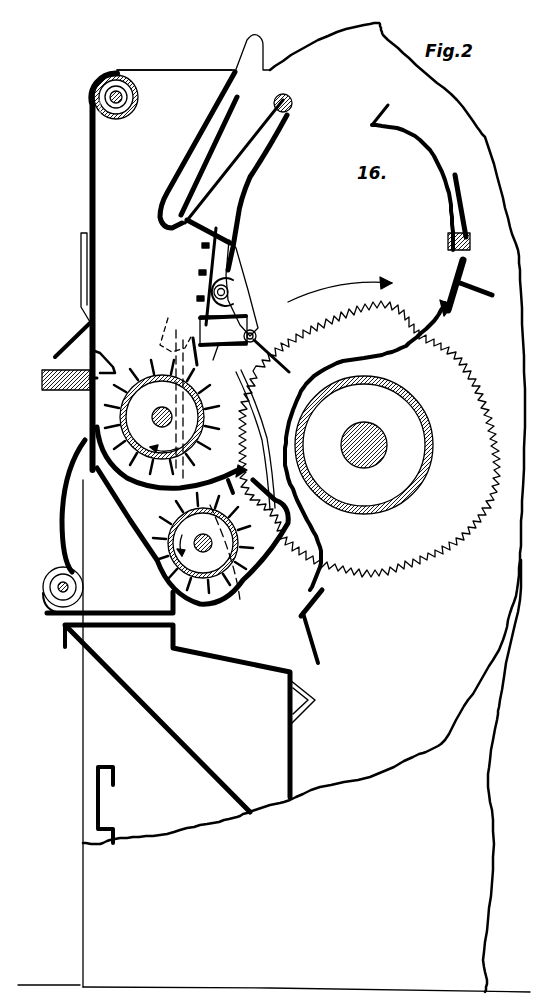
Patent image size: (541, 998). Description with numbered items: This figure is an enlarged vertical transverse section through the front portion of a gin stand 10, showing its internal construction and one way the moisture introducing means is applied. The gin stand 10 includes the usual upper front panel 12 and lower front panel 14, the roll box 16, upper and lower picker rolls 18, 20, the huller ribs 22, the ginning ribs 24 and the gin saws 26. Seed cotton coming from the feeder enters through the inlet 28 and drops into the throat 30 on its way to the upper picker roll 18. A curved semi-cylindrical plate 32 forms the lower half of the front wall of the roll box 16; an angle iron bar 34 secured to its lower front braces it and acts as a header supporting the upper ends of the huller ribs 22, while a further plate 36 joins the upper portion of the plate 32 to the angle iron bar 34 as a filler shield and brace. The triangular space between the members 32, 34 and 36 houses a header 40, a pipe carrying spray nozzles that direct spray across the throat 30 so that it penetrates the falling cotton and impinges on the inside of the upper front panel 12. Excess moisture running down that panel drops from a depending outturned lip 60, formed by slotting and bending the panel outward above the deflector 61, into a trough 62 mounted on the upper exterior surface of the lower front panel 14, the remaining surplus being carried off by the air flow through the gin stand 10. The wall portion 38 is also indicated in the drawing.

The gin stand 10 is at (115, 58).
The upper front panel 12 is at (90, 163).
The lower front panel 14 is at (78, 461).
The roll box 16 is at (304, 433).
The upper picker roll 18 is at (147, 398).
The lower picker roll 20 is at (200, 566).
The huller ribs 22 is at (259, 411).
The ginning ribs 24 is at (383, 349).
The gin saws 26 is at (412, 549).
The inlet 28 is at (170, 85).
The throat 30 is at (110, 216).
The curved semi-cylindrical plate 32 is at (234, 271).
The angle iron bar 34 is at (219, 344).
The filler shield plate 36 is at (213, 258).
The housing wall 38 is at (512, 776).
The header 40 is at (230, 292).
The apron or lip 60 is at (78, 331).
The deflector 61 is at (100, 350).
The trough 62 is at (52, 392).